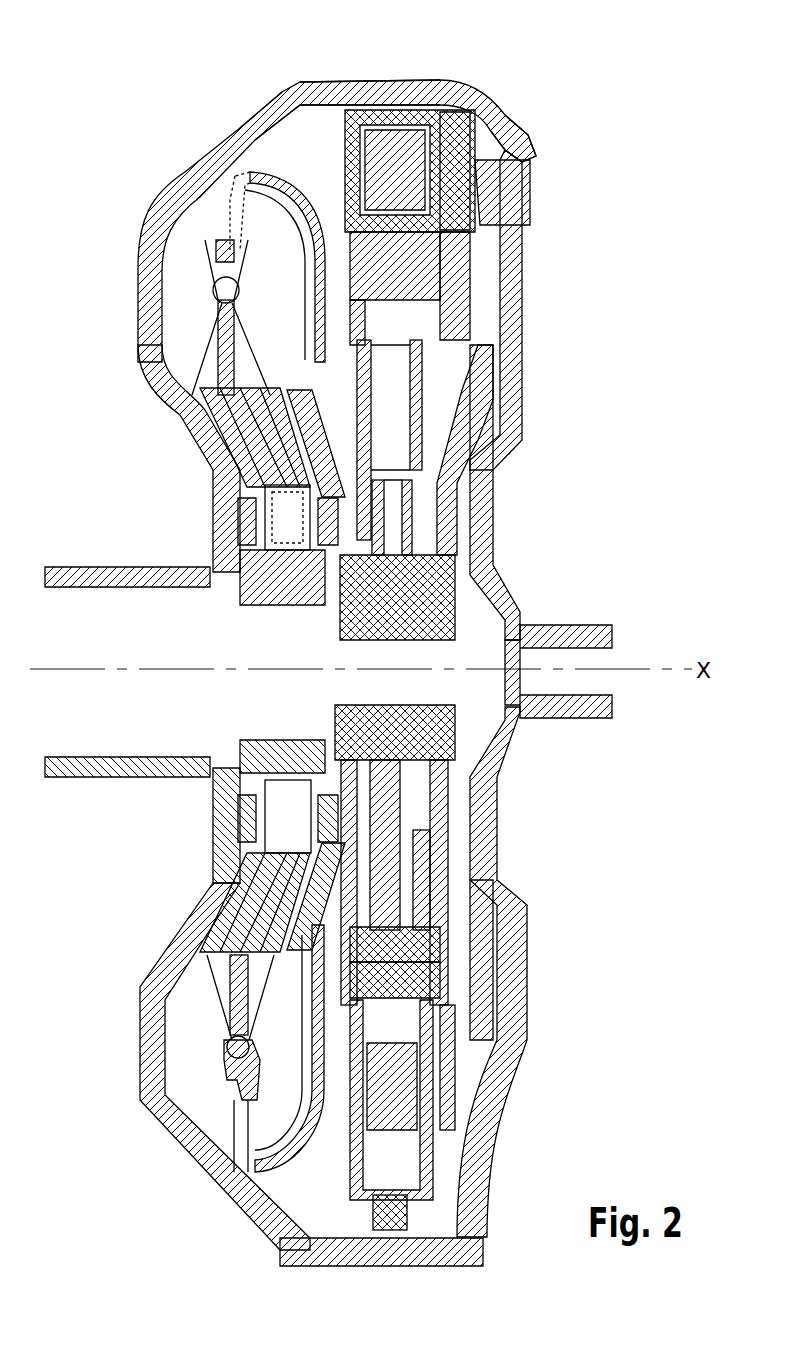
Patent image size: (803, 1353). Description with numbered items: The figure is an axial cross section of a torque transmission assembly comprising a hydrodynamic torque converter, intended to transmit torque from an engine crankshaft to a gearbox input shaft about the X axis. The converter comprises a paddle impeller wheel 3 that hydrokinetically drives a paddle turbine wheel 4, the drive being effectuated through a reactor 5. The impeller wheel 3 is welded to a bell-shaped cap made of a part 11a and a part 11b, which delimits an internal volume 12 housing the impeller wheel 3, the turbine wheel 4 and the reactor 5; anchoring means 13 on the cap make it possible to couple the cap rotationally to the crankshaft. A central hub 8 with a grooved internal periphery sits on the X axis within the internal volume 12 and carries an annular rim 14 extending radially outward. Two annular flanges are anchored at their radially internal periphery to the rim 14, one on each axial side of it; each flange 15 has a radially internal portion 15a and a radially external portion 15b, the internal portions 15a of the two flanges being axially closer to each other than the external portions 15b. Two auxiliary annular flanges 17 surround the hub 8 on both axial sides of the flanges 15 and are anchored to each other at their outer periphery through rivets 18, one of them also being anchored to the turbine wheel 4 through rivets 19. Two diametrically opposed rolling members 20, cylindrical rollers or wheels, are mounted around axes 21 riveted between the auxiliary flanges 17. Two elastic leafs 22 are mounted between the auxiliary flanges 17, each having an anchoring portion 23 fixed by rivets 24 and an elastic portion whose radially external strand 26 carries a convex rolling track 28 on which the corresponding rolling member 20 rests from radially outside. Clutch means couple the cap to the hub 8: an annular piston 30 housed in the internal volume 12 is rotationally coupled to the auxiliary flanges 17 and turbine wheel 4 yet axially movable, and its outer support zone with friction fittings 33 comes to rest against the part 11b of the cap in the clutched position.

The paddle impeller wheel 3 is at (182, 284).
The paddle turbine wheel 4 is at (273, 230).
The reactor 5 is at (236, 356).
The central hub 8 is at (352, 618).
The part of the cap 11a is at (192, 182).
The part of the cap 11b is at (400, 85).
The internal volume 12 is at (290, 140).
The anchoring means 13 is at (520, 195).
The annular rim 14 is at (397, 557).
The flange 15 is at (461, 945).
The radially internal portion 15a is at (407, 840).
The radially external portion 15b is at (423, 927).
The auxiliary annular flange 17 is at (440, 387).
The rivets 18 is at (407, 1217).
The rivets 19 is at (360, 482).
The rolling member 20 is at (380, 120).
The axis 21 is at (407, 193).
The elastic leaf 22 is at (397, 1077).
The anchoring portion 23 is at (393, 997).
The rivets 24 is at (417, 970).
The radially external strand 26 is at (413, 313).
The rolling track 28 is at (413, 260).
The annular piston 30 is at (473, 337).
The friction fittings 33 is at (460, 153).